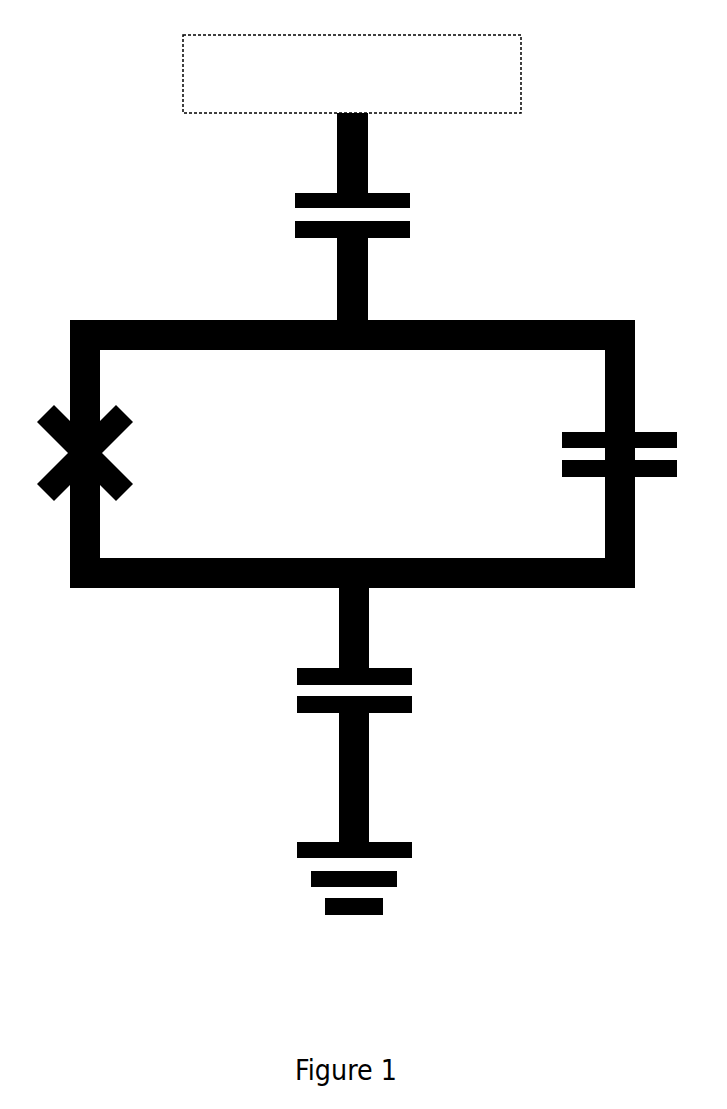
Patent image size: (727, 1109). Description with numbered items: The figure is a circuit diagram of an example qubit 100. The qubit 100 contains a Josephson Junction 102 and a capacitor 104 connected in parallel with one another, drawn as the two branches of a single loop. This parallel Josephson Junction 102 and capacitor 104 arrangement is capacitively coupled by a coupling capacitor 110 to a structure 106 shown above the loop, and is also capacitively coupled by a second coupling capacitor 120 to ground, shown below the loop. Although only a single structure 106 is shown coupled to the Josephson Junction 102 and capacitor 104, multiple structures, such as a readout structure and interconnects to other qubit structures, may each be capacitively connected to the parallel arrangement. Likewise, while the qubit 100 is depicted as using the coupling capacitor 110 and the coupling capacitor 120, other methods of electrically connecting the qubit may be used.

The qubit 100 is at (126, 173).
The Josephson Junction 102 is at (120, 455).
The capacitor 104 is at (553, 457).
The structure 106 is at (521, 70).
The coupling capacitor 110 is at (410, 208).
The coupling capacitor 120 is at (412, 685).